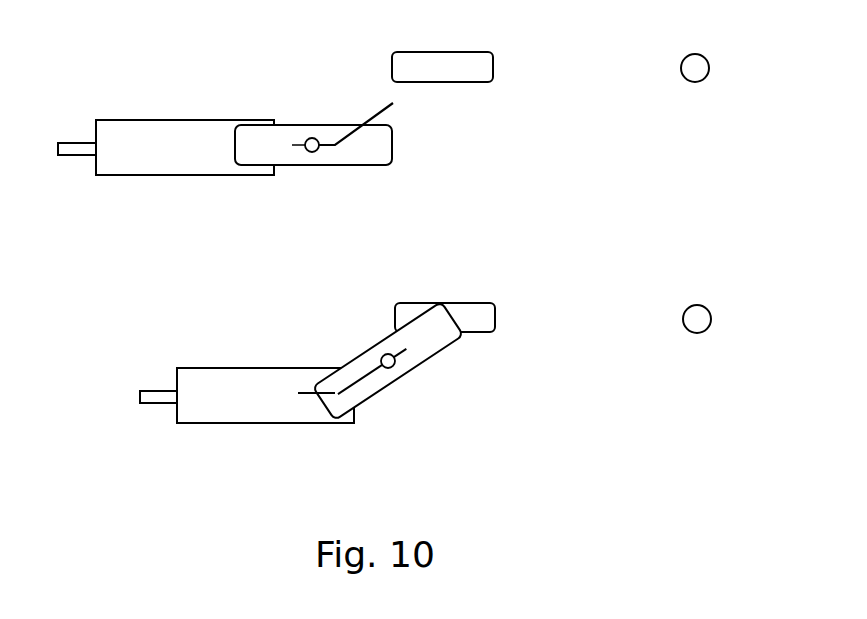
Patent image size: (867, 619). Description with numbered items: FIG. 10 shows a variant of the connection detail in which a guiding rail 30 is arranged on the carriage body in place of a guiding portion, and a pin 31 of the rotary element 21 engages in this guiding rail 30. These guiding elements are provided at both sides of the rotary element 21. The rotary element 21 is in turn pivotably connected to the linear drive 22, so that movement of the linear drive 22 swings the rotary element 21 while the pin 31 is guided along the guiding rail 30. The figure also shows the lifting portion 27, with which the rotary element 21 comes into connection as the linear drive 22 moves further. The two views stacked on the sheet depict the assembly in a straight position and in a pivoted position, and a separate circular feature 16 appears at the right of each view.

The pivot pin / receiving hole 16 is at (698, 318).
The rotary element 21 is at (423, 340).
The linear drive 22 is at (252, 393).
The lifting portion 27 is at (477, 318).
The guiding rail 30 is at (375, 115).
The pin 31 is at (390, 365).